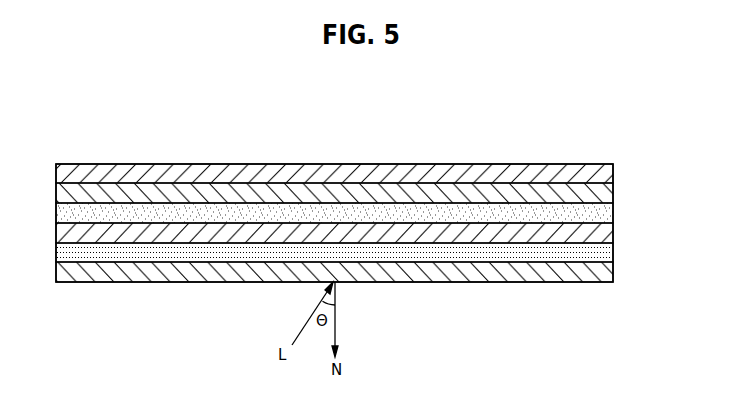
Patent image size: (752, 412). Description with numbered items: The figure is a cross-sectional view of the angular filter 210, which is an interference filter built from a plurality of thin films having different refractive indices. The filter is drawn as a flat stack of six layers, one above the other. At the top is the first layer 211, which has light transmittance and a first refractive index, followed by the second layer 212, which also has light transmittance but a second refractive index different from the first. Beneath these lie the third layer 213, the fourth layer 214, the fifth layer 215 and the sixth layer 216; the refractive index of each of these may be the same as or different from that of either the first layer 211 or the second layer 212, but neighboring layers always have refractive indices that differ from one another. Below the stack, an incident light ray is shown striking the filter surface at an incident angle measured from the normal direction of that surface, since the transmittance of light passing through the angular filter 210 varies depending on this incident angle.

The angular filter 210 is at (100, 153).
The first layer 211 is at (605, 177).
The second layer 212 is at (606, 192).
The third layer 213 is at (605, 212).
The fourth layer 214 is at (605, 234).
The fifth layer 215 is at (605, 252).
The sixth layer 216 is at (605, 272).